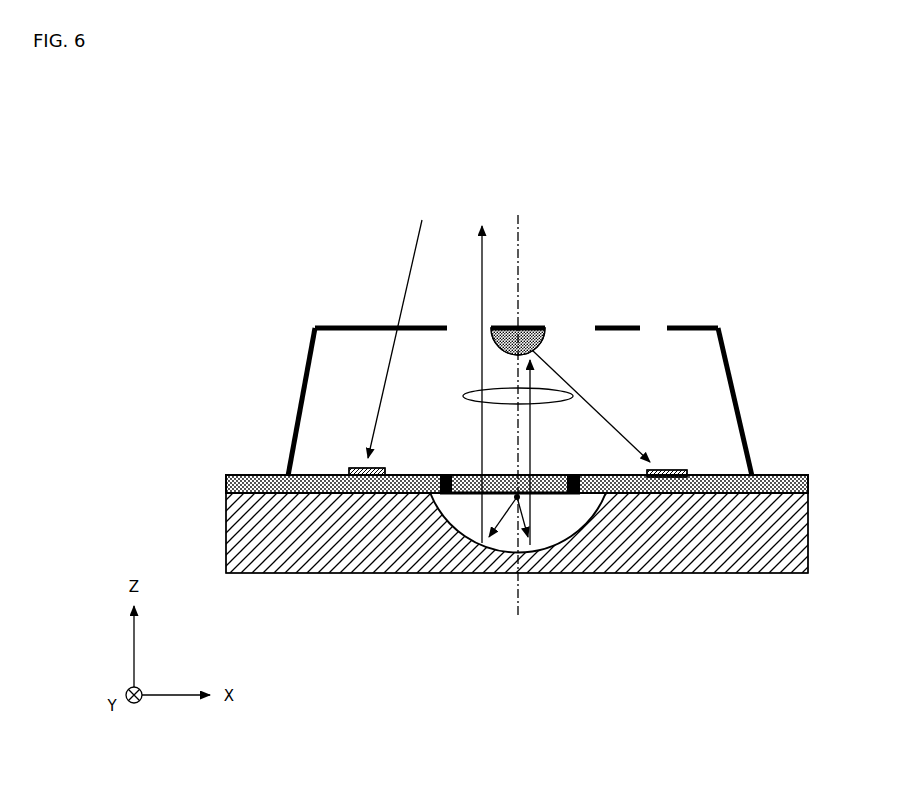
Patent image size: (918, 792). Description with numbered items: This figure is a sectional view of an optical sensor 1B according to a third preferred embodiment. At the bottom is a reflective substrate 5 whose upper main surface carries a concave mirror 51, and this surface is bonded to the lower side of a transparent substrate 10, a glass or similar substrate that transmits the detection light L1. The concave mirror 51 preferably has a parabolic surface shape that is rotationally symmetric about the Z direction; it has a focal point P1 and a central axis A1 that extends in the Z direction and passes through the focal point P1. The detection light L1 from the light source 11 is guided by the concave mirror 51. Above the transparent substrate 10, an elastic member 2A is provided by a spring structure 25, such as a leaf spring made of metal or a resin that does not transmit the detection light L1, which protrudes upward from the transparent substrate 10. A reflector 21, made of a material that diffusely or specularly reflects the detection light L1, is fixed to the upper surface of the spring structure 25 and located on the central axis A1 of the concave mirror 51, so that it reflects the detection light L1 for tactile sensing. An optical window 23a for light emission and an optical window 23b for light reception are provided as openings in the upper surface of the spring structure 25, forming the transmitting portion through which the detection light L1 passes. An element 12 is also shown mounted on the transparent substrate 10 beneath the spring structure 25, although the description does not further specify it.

The optical sensor 1B is at (188, 261).
The elastic member 2A is at (205, 475).
The reflective substrate 5 is at (226, 538).
The transparent substrate 10 is at (226, 481).
The light source 11 is at (521, 498).
The light emitting element 12 is at (358, 467).
The reflector 21 is at (542, 334).
The optical window for light emission 23a is at (458, 309).
The optical window for light reception 23b is at (378, 309).
The spring structure 25 is at (697, 327).
The concave mirror 51 is at (463, 538).
The detection light L1 is at (485, 391).
The focal point P1 is at (515, 493).
The central axis A1 is at (518, 428).